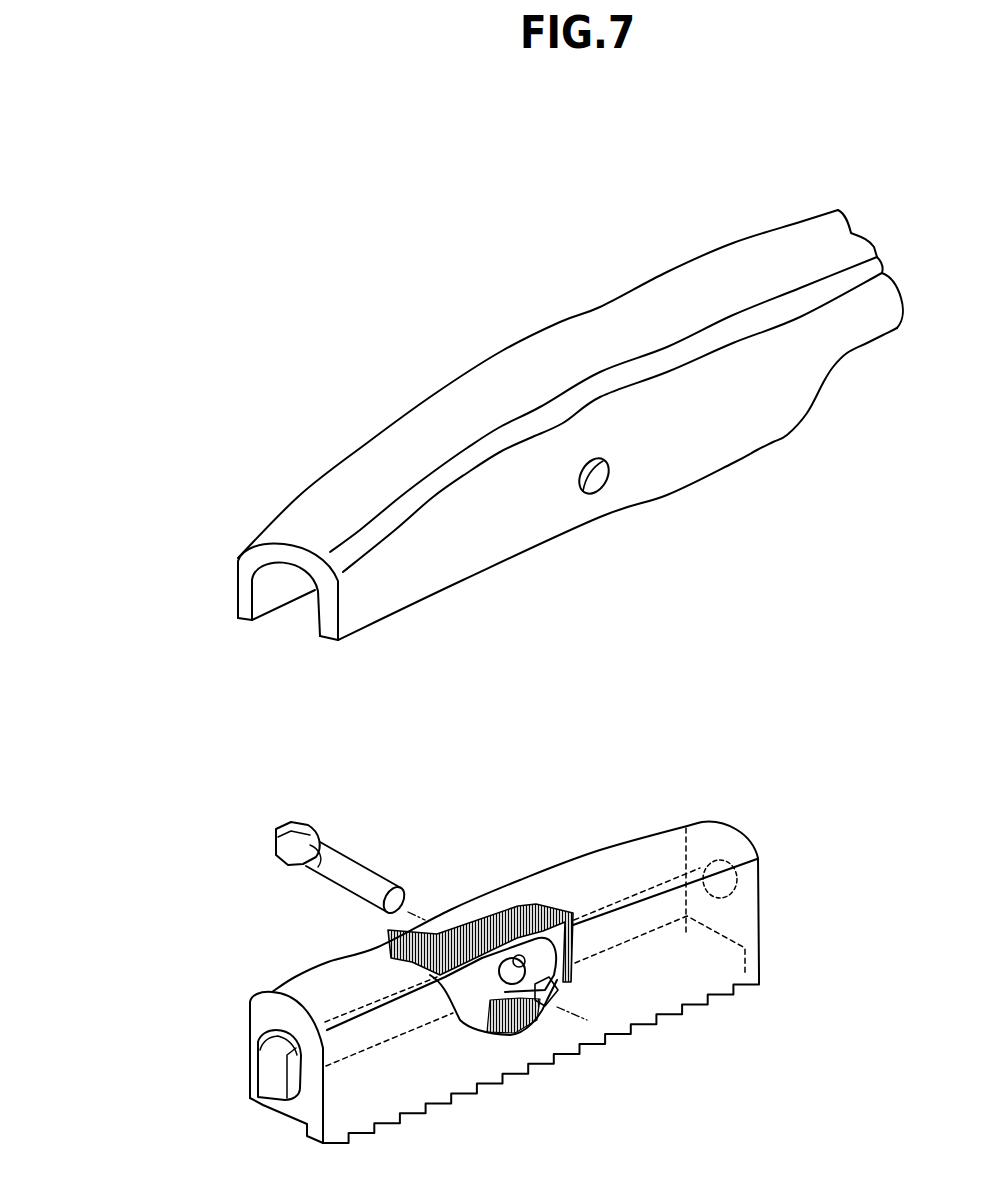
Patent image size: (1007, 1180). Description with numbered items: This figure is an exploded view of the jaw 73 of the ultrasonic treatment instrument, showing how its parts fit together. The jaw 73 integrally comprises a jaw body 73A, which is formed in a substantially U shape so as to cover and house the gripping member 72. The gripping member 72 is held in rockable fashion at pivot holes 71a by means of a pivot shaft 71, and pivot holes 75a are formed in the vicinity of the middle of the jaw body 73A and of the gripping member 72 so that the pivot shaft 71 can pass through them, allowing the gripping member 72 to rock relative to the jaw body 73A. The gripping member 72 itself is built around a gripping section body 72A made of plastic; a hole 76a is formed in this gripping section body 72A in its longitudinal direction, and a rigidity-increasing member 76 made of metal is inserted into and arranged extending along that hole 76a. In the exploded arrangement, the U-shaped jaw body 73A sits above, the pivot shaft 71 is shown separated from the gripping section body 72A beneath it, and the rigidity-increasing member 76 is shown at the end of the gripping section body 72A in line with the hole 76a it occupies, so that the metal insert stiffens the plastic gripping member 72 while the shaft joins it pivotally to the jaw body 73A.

The jaw 73 is at (218, 1179).
The jaw body 73A is at (570, 425).
The pivot holes 71a is at (597, 494).
The gripping member 72 is at (584, 812).
The gripping section body 72A is at (503, 972).
The pivot shaft 71 is at (355, 870).
The pivot holes 75a is at (547, 1003).
The rigidity-increasing member 76 is at (273, 1082).
The hole 76a is at (692, 866).